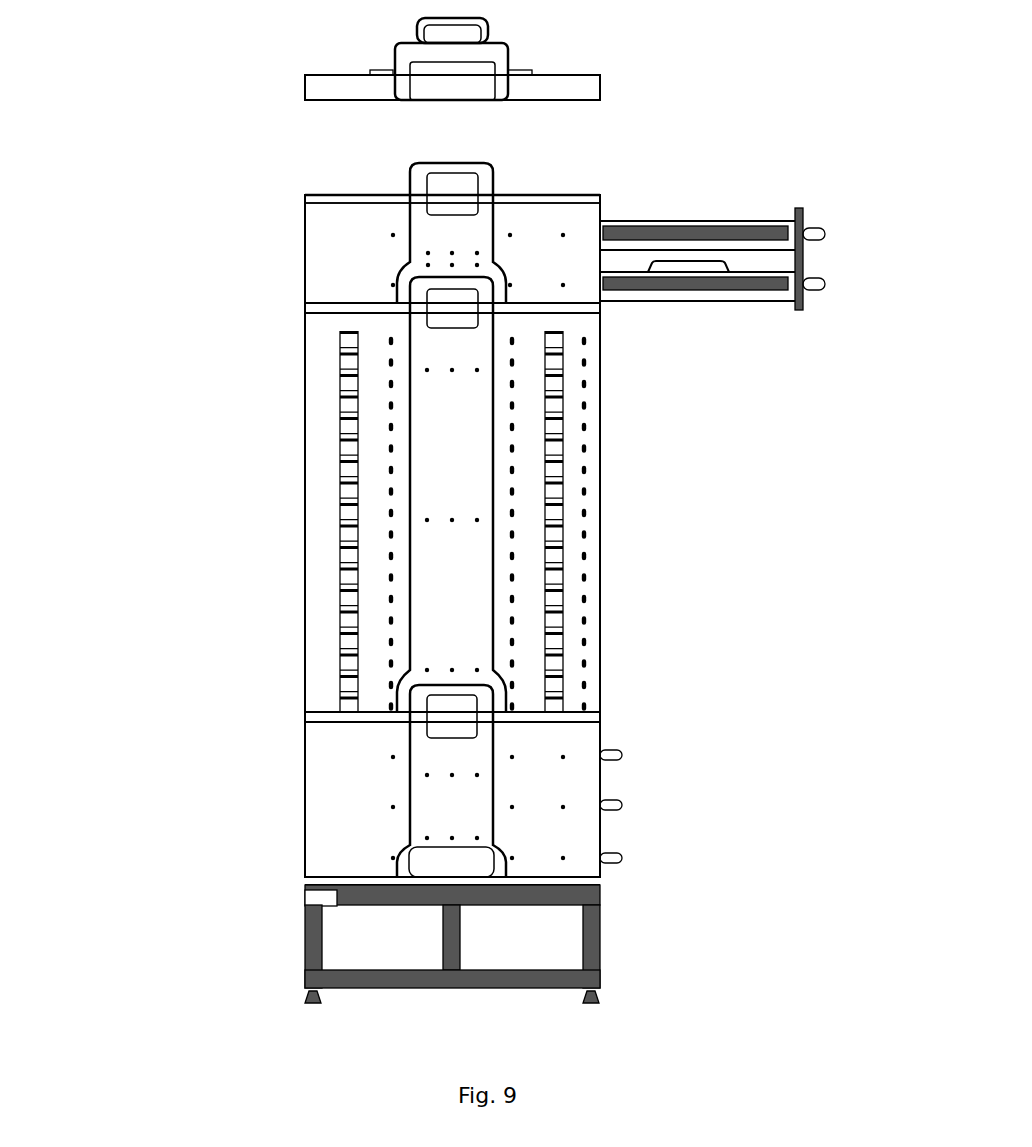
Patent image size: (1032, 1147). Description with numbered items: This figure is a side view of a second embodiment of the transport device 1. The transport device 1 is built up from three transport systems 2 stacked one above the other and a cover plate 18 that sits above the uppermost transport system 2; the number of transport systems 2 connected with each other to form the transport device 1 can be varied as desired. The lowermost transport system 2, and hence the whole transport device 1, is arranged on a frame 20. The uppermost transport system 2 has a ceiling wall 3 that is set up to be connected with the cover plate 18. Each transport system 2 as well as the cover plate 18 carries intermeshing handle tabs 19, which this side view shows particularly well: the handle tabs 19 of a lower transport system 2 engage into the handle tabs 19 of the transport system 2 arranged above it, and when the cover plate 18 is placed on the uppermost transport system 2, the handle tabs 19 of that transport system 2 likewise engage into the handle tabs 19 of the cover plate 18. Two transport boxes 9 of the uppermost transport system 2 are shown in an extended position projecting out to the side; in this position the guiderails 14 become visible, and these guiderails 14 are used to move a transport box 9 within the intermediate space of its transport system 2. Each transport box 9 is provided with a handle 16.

The transport device 1 is at (475, 501).
The transport system 2 is at (313, 259).
The ceiling wall 3 is at (330, 195).
The transport box 9 is at (800, 222).
The guiderail 14 is at (655, 282).
The handle 16 is at (618, 755).
The cover plate 18 is at (570, 95).
The handle tab 19 is at (410, 52).
The frame 20 is at (318, 985).